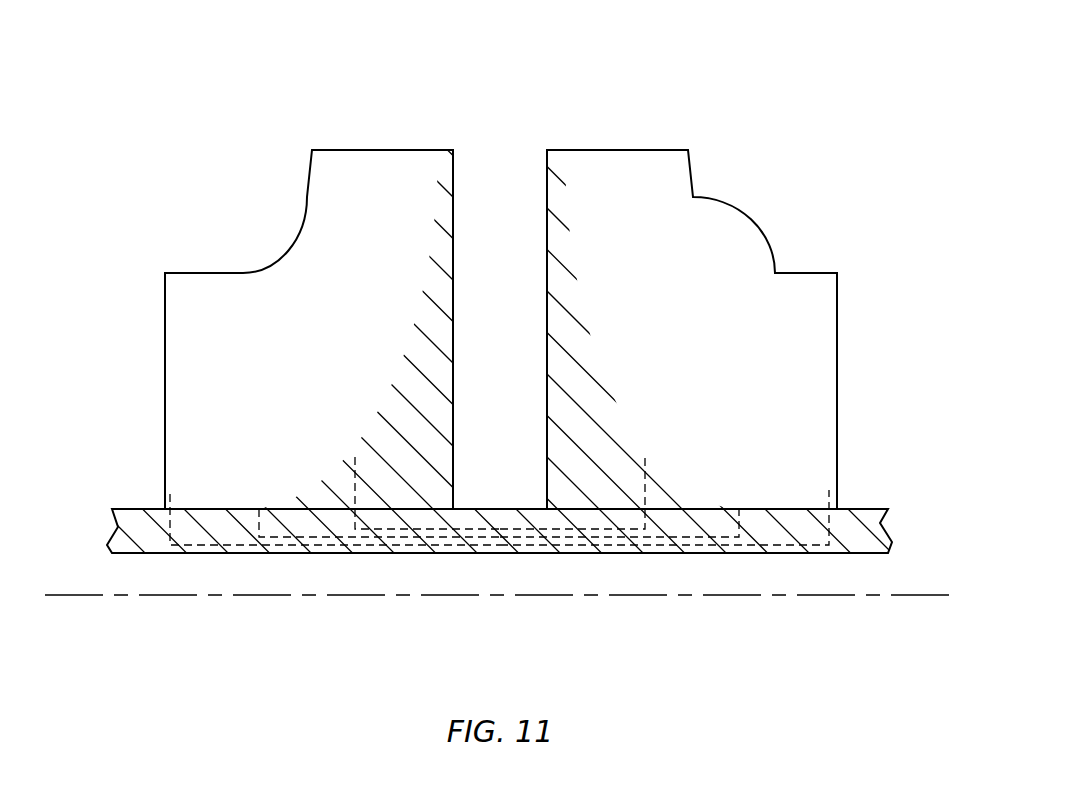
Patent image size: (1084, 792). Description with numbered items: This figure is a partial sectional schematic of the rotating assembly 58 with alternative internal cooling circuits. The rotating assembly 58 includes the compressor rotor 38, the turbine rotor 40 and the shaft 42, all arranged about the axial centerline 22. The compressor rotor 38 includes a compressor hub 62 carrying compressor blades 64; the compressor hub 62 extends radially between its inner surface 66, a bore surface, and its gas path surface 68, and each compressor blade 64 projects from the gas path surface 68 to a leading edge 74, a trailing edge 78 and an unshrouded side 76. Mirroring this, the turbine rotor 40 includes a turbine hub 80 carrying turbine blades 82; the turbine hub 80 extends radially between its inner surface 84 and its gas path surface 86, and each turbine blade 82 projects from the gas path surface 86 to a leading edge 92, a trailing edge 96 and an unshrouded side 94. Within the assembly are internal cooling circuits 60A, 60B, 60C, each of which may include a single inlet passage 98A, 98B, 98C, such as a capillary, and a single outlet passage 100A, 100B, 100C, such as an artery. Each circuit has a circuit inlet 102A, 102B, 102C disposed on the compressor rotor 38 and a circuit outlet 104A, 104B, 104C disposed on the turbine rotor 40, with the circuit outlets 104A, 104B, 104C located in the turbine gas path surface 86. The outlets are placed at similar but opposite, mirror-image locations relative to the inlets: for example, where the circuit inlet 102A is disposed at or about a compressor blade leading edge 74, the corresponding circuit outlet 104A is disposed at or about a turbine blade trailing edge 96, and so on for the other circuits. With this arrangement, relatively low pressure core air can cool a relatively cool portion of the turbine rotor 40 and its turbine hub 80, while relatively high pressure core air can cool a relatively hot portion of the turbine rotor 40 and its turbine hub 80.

The rotating assembly 58 is at (196, 130).
The compressor rotor 38 is at (423, 145).
The turbine rotor 40 is at (578, 145).
The shaft 42 is at (498, 505).
The compressor hub 62 is at (154, 558).
The turbine hub 80 is at (863, 559).
The axial centerline 22 is at (950, 597).
The compressor blades 64 is at (246, 257).
The turbine blades 82 is at (706, 208).
The leading edge 74 is at (164, 360).
The trailing edge 96 is at (838, 375).
The side 76 is at (306, 196).
The side 94 is at (727, 254).
The trailing edge 78 is at (362, 149).
The leading edge 92 is at (639, 149).
The gas path surface 68 is at (217, 508).
The gas path surface 86 is at (785, 508).
The inner surface 66 is at (272, 556).
The inner surface 84 is at (693, 556).
The internal cooling circuit 60A is at (469, 549).
The internal cooling circuit 60B is at (366, 543).
The internal cooling circuit 60C is at (384, 524).
The cooling circuit inlet passage 98A is at (213, 556).
The cooling circuit inlet passage 98B is at (313, 556).
The cooling circuit inlet passage 98C is at (428, 556).
The cooling circuit outlet passage 100A is at (761, 556).
The cooling circuit outlet passage 100B is at (633, 556).
The cooling circuit outlet passage 100C is at (573, 556).
The cooling circuit inlet 102A is at (166, 493).
The cooling circuit inlet 102B is at (259, 507).
The cooling circuit inlet 102C is at (356, 456).
The cooling circuit outlet 104A is at (838, 489).
The cooling circuit outlet 104B is at (740, 507).
The cooling circuit outlet 104C is at (646, 456).